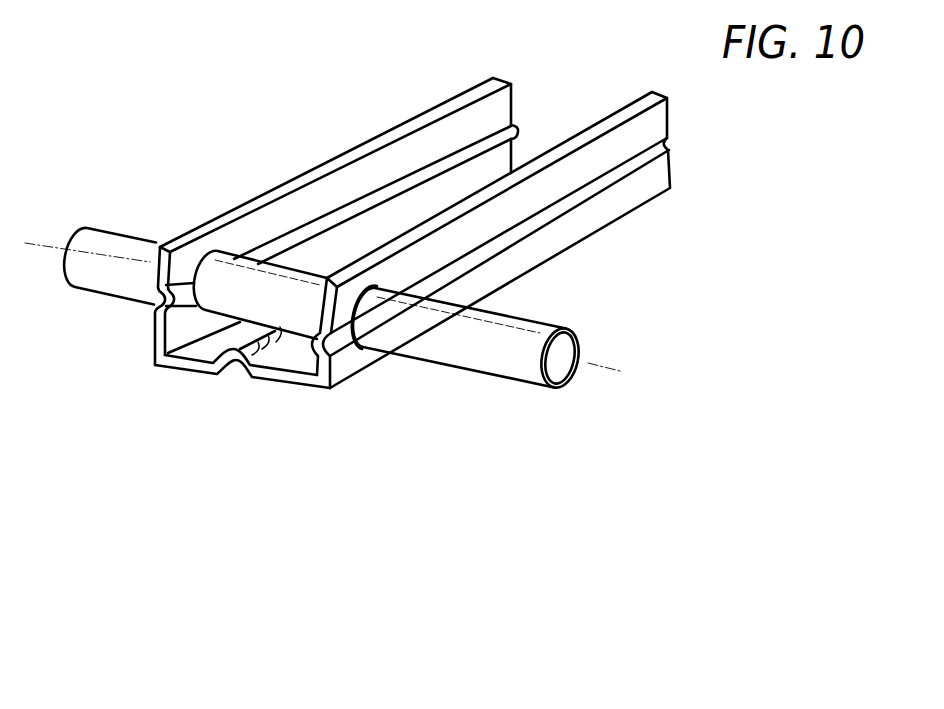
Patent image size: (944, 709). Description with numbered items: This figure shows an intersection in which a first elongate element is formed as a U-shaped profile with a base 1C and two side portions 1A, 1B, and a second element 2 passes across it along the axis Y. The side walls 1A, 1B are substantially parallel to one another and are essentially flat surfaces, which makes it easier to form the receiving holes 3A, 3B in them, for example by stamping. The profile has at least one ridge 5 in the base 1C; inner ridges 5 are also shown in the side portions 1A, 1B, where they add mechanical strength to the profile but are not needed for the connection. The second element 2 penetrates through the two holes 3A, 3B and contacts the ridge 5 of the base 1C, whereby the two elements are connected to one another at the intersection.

The side portion 1A is at (622, 203).
The side portion 1B is at (338, 187).
The base 1C is at (182, 373).
The second element 2 is at (324, 309).
The receiving hole 3A is at (197, 293).
The receiving hole 3B is at (382, 275).
The ridge 5 is at (303, 227).
The tube axis Y is at (267, 427).